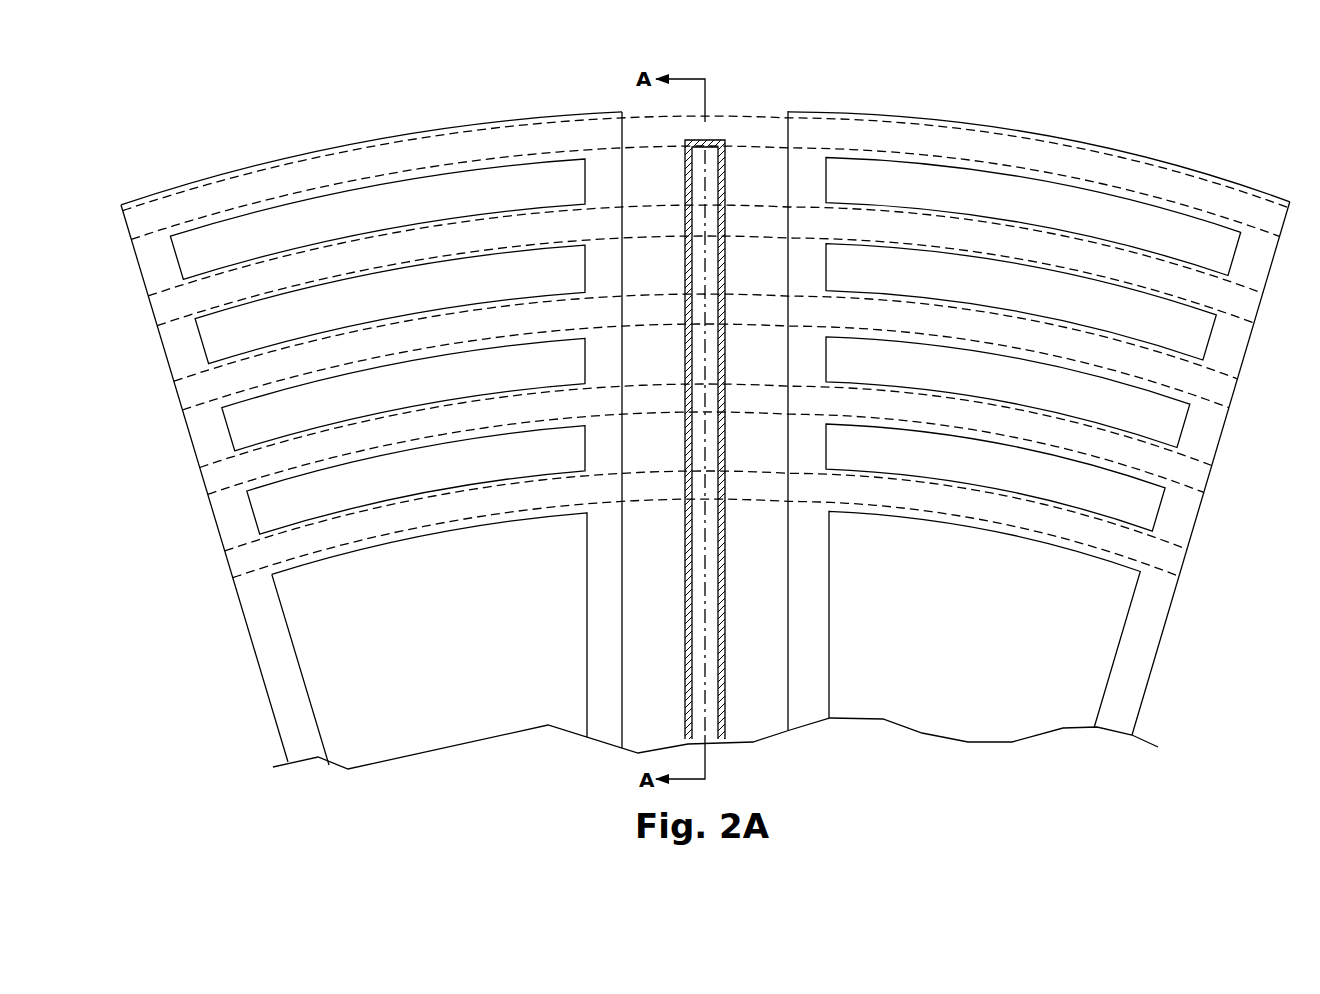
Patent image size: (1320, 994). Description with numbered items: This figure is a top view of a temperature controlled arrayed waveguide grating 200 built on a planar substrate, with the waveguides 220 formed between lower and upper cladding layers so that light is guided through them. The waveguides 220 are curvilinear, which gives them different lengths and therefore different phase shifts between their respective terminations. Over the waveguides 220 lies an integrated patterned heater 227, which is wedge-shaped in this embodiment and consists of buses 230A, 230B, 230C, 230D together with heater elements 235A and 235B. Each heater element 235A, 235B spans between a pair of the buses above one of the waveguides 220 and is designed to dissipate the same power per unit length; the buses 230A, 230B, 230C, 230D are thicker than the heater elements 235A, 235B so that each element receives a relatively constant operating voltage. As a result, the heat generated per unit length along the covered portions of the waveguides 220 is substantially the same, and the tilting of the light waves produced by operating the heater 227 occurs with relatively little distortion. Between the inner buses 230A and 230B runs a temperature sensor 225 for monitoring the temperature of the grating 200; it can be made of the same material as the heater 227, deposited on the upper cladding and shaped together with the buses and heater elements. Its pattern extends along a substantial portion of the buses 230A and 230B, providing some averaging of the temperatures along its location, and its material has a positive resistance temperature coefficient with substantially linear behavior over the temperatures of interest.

The temperature controlled arrayed waveguide grating 200 is at (1192, 104).
The waveguides 220 is at (677, 156).
The temperature sensor 225 is at (688, 653).
The integrated patterned heater 227 is at (500, 110).
The bus 230A is at (618, 105).
The bus 230B is at (815, 106).
The bus 230C is at (143, 192).
The bus 230D is at (1278, 190).
The heater element 235A is at (477, 210).
The heater element 235B is at (1040, 225).